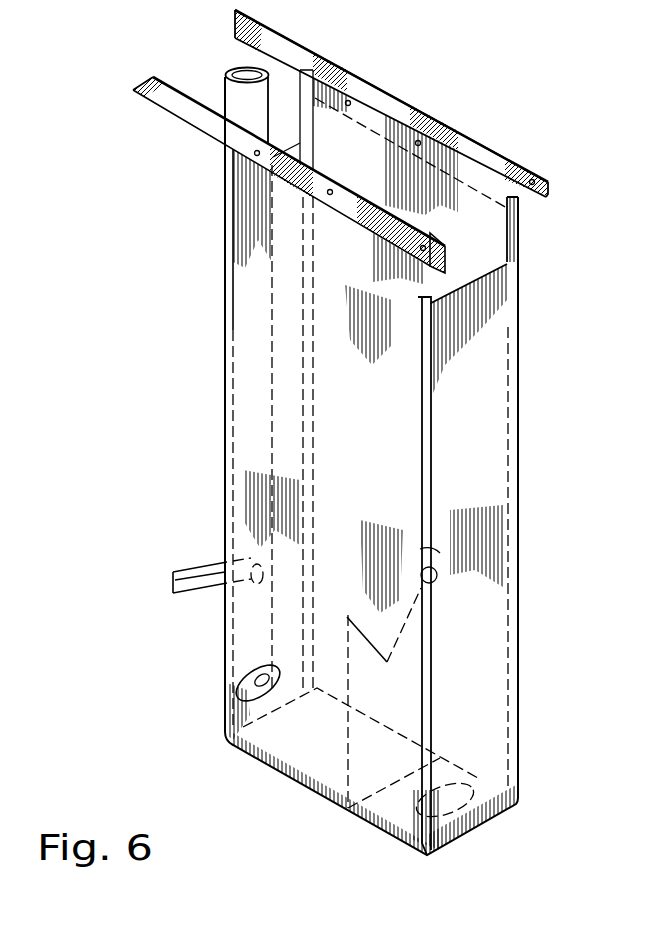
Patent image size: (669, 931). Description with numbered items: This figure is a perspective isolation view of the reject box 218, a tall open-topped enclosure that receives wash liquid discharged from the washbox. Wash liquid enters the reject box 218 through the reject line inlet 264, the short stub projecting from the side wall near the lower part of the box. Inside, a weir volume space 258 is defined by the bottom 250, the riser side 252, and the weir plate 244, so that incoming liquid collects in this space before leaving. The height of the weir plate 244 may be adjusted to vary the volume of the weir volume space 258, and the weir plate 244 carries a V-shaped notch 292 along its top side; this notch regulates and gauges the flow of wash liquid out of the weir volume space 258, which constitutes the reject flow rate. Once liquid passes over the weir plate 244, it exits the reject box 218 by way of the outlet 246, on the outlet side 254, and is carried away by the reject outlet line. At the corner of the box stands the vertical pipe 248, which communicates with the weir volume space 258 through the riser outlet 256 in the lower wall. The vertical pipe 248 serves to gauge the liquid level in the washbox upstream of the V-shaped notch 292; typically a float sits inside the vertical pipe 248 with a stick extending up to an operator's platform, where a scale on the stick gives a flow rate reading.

The reject box 218 is at (523, 308).
The weir plate 244 is at (347, 752).
The outlet 246 is at (478, 790).
The vertical pipe 248 is at (222, 78).
The bottom 250 is at (300, 735).
The riser side 252 is at (224, 382).
The outlet side 254 is at (478, 487).
The riser outlet 256 is at (250, 684).
The weir volume space 258 is at (258, 465).
The reject line inlet 264 is at (200, 594).
The V-shaped notch 292 is at (400, 640).